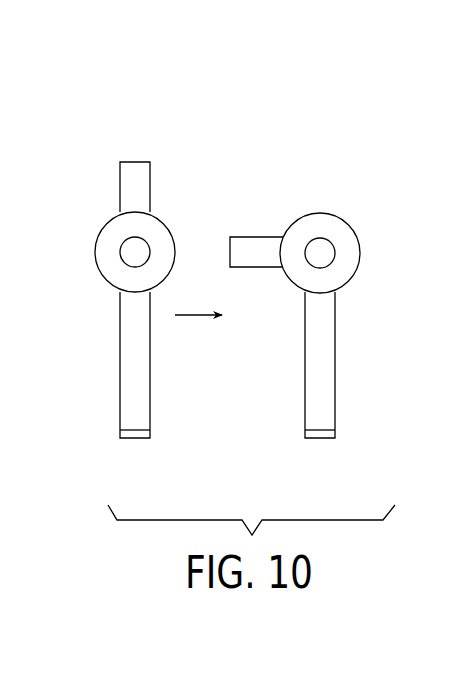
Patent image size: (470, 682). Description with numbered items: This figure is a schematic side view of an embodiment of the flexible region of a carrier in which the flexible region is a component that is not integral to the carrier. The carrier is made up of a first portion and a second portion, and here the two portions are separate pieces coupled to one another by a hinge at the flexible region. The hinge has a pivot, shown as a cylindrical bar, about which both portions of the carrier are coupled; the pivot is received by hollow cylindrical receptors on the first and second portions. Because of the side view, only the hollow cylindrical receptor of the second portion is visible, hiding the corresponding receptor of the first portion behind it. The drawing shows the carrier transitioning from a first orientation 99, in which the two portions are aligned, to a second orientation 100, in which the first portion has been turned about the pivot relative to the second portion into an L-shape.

The first orientation 99 is at (93, 97).
The second orientation 100 is at (366, 135).